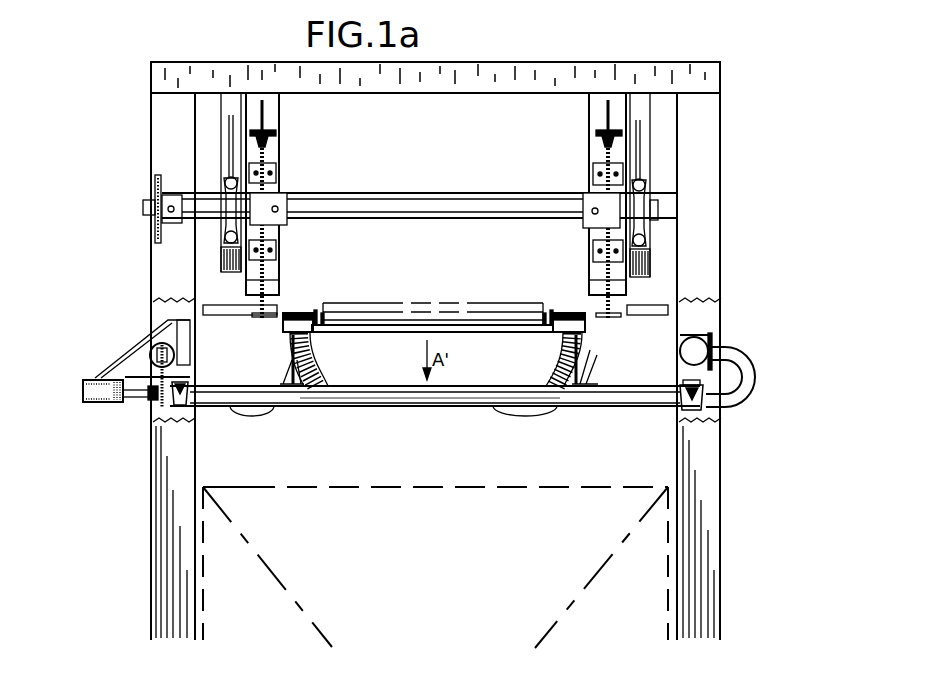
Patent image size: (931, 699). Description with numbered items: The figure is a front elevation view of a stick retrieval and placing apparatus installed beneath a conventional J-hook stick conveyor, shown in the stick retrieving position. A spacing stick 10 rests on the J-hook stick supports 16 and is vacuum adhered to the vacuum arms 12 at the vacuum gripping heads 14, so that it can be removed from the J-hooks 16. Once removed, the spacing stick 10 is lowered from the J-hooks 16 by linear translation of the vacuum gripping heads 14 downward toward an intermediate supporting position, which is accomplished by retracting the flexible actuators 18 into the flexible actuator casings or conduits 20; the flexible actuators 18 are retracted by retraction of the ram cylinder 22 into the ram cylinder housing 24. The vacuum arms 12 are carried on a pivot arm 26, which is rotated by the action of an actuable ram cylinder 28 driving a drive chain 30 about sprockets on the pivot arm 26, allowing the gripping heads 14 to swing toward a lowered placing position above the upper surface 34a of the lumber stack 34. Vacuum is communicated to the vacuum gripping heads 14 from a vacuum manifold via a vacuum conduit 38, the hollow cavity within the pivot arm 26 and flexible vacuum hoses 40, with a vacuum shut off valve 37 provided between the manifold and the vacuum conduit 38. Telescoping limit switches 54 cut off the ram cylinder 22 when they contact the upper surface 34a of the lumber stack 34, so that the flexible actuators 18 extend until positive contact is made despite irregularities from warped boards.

The spacing stick 10 is at (660, 308).
The vacuum arm 12 is at (195, 312).
The vacuum gripping head 14 is at (298, 313).
The J-hook stick support 16 is at (262, 107).
The flexible actuator 18 is at (270, 358).
The flexible actuator casing 20 is at (265, 410).
The ram cylinder 22 is at (127, 398).
The ram cylinder housing 24 is at (85, 394).
The pivot arm 26 is at (620, 407).
The actuable ram cylinder 28 is at (128, 357).
The drive chain 30 is at (153, 415).
The lumber stack 34 is at (575, 564).
The upper surface 34a is at (248, 484).
The vacuum shut off valve 37 is at (708, 340).
The vacuum conduit 38 is at (755, 380).
The flexible vacuum hose 40 is at (705, 405).
The telescoping limit switch 54 is at (325, 305).